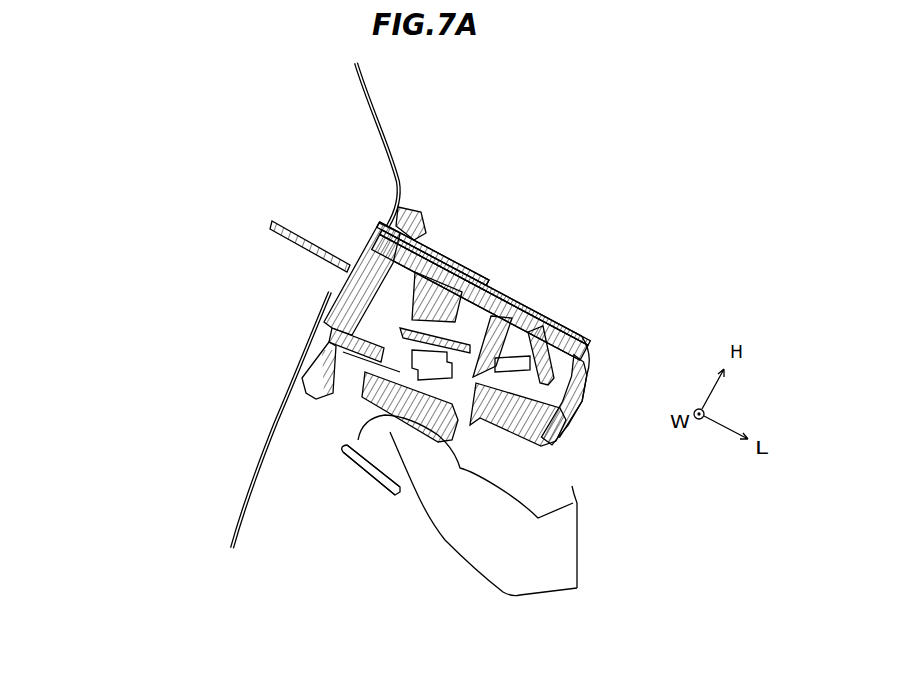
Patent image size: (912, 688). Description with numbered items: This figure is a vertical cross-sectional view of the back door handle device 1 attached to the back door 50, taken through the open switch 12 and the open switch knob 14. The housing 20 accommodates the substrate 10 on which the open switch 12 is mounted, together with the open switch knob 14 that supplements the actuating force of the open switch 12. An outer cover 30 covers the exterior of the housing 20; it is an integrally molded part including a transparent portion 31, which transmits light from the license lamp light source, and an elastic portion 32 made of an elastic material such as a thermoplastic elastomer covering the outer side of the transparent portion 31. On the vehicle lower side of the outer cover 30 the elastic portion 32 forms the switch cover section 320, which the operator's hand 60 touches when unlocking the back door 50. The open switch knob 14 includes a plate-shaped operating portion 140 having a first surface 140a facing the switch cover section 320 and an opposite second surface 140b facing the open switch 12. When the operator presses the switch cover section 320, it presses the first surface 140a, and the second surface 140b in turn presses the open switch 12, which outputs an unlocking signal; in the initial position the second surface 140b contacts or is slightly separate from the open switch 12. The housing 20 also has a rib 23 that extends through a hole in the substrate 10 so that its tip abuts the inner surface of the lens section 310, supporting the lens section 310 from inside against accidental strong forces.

The back door handle device 1 is at (442, 325).
The substrate 10 is at (500, 363).
The open switch 12 is at (410, 347).
The open switch knob 14 is at (338, 337).
The housing 20 is at (365, 248).
The rib 23 is at (483, 378).
The outer cover 30 is at (495, 274).
The transparent portion 31 is at (473, 275).
The elastic portion 32 is at (506, 292).
The back door 50 is at (282, 403).
The operator's hand 60 is at (525, 587).
The operating portion 140 is at (392, 507).
The first surface 140a is at (405, 420).
The second surface 140b is at (437, 440).
The lens section 310 is at (509, 398).
The switch cover section 320 is at (378, 402).